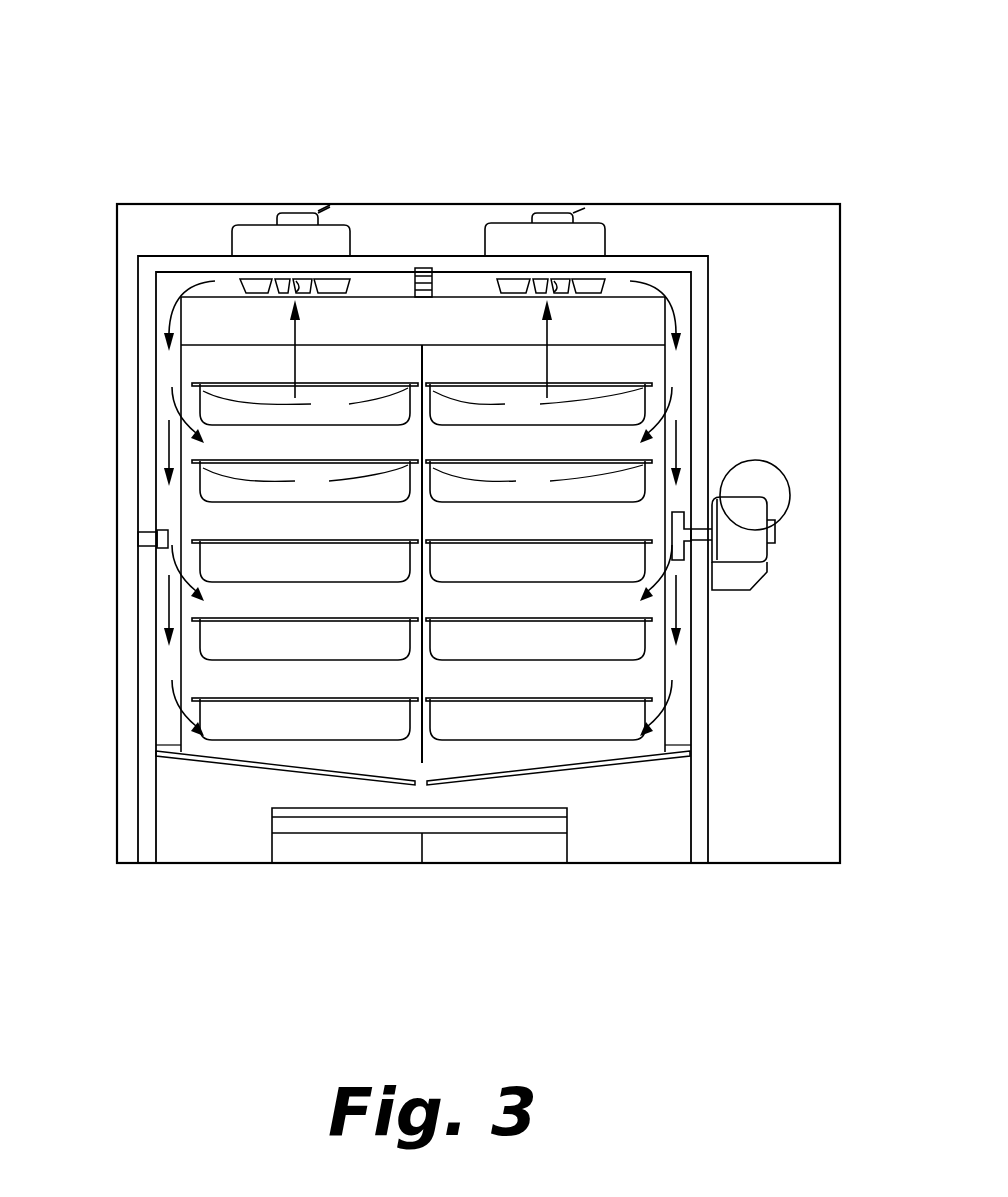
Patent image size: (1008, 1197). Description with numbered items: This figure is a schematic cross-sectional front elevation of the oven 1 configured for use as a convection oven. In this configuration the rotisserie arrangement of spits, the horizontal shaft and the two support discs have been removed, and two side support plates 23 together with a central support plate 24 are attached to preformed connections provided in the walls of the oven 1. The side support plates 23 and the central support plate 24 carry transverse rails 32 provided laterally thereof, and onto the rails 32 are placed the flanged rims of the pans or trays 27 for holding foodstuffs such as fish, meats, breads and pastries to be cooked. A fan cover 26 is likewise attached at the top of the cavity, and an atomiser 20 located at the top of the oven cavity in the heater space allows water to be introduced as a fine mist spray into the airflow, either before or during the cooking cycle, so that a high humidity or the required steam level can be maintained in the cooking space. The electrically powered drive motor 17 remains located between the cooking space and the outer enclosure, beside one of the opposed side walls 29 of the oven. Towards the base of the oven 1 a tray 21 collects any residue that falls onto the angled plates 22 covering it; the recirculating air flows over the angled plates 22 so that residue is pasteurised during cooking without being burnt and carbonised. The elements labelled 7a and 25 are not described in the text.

The oven 1 is at (587, 92).
The fan motor 7a is at (245, 237).
The atomiser 20 is at (415, 283).
The fan cover 26 is at (465, 298).
The air flow channel 25 is at (167, 415).
The pans or trays 27 is at (153, 522).
The drive motor 17 is at (740, 512).
The side support plates 23 is at (178, 665).
The side walls 29 is at (153, 730).
The angled plates 22 is at (243, 765).
The tray 21 is at (315, 850).
The central support plate 24 is at (428, 757).
The transverse rails 32 is at (422, 561).